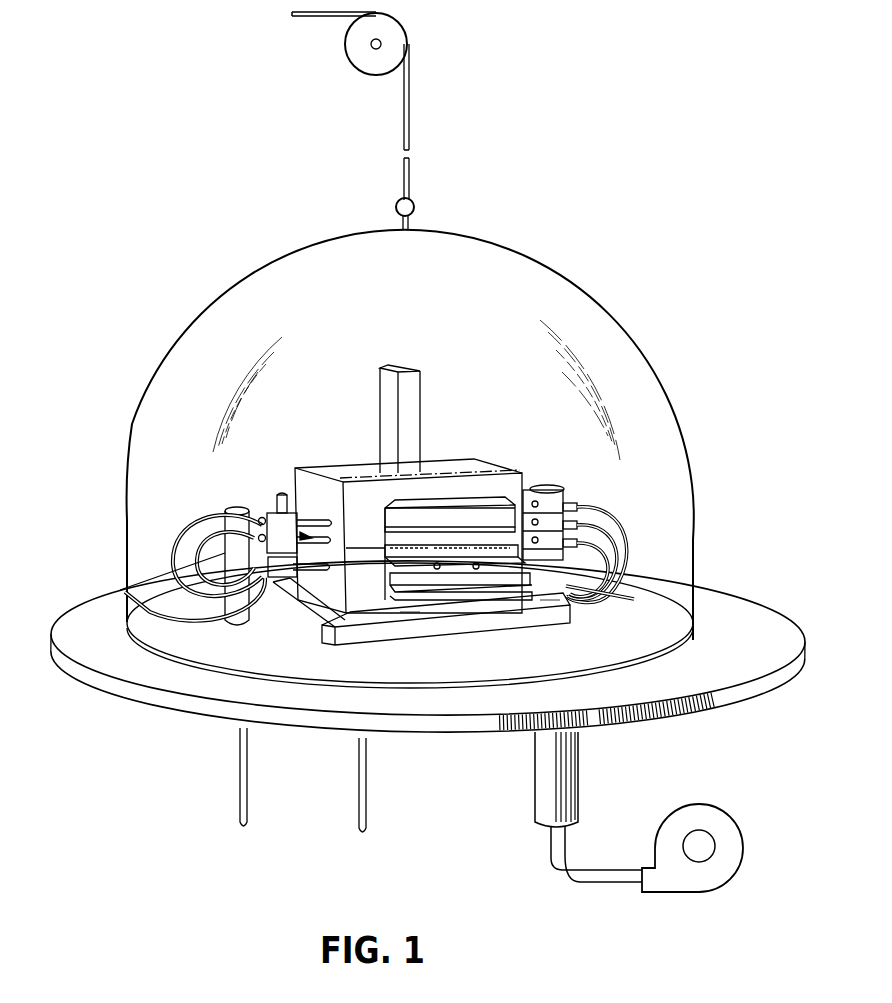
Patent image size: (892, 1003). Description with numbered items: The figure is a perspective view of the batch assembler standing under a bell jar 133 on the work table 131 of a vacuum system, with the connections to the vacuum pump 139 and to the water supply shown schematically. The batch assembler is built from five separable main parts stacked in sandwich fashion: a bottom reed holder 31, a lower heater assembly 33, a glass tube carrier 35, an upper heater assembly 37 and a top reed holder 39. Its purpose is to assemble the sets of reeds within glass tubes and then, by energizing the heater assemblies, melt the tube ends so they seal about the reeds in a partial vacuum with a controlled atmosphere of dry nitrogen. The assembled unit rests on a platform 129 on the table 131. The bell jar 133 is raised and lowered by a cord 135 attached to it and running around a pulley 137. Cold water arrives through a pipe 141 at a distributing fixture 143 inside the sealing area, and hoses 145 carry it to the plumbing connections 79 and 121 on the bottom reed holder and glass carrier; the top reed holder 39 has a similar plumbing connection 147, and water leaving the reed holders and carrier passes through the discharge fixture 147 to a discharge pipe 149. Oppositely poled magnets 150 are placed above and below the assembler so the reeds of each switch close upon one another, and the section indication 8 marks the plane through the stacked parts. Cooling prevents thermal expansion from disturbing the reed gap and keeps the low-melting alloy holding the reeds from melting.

The pulley 137 is at (358, 59).
The cord 135 is at (402, 146).
The bell jar 133 is at (537, 258).
The work table 131 is at (737, 671).
The pipe 141 is at (248, 760).
The discharge pipe 149 is at (367, 760).
The vacuum pump 139 is at (690, 806).
The distributing fixture 143 is at (240, 510).
The hoses 145 is at (206, 514).
The plumbing connection / discharge plumbing fixture 147 is at (282, 514).
The plumbing connection 121 is at (298, 518).
The platform 129 is at (329, 571).
The plumbing connection 79 is at (330, 572).
The top reed holder 39 is at (371, 511).
The magnets 150 is at (420, 425).
The section line 8- 8 is at (340, 470).
The upper heater assembly 37 is at (384, 527).
The glass tube carrier 35 is at (384, 562).
The lower heater assembly 33 is at (396, 590).
The bottom reed holder 31 is at (383, 607).